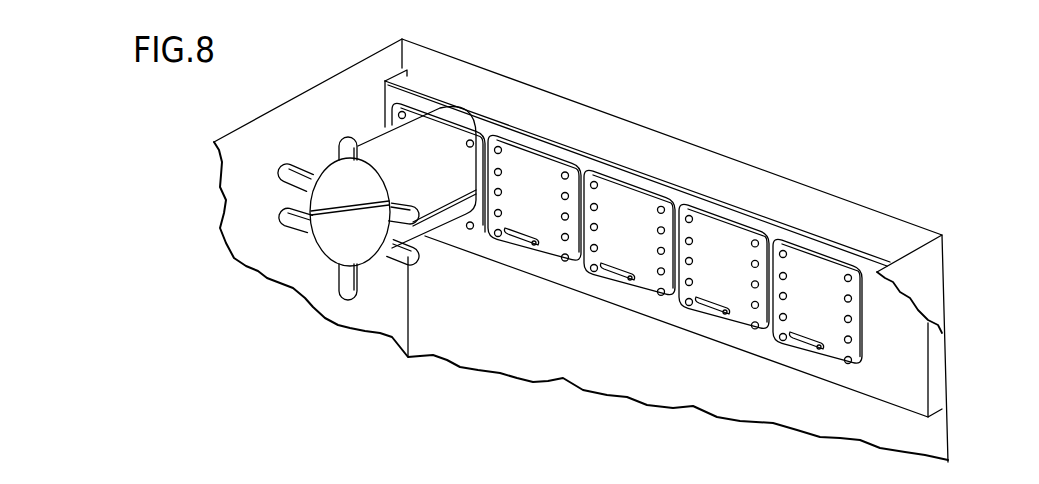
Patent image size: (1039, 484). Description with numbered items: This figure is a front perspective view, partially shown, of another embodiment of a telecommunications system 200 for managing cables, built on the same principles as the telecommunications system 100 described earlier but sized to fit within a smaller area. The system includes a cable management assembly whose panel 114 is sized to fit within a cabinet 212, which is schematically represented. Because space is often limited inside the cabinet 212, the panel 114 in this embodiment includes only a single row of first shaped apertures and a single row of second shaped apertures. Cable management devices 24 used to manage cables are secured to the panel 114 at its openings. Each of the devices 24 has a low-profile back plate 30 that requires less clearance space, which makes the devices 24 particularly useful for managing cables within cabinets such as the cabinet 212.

The cable management device 24 is at (320, 131).
The low-profile back plate 30 is at (477, 228).
The telecommunications system 100 is at (537, 345).
The panel 114 is at (770, 348).
The telecommunications system 200 is at (887, 172).
The cabinet 212 is at (612, 135).